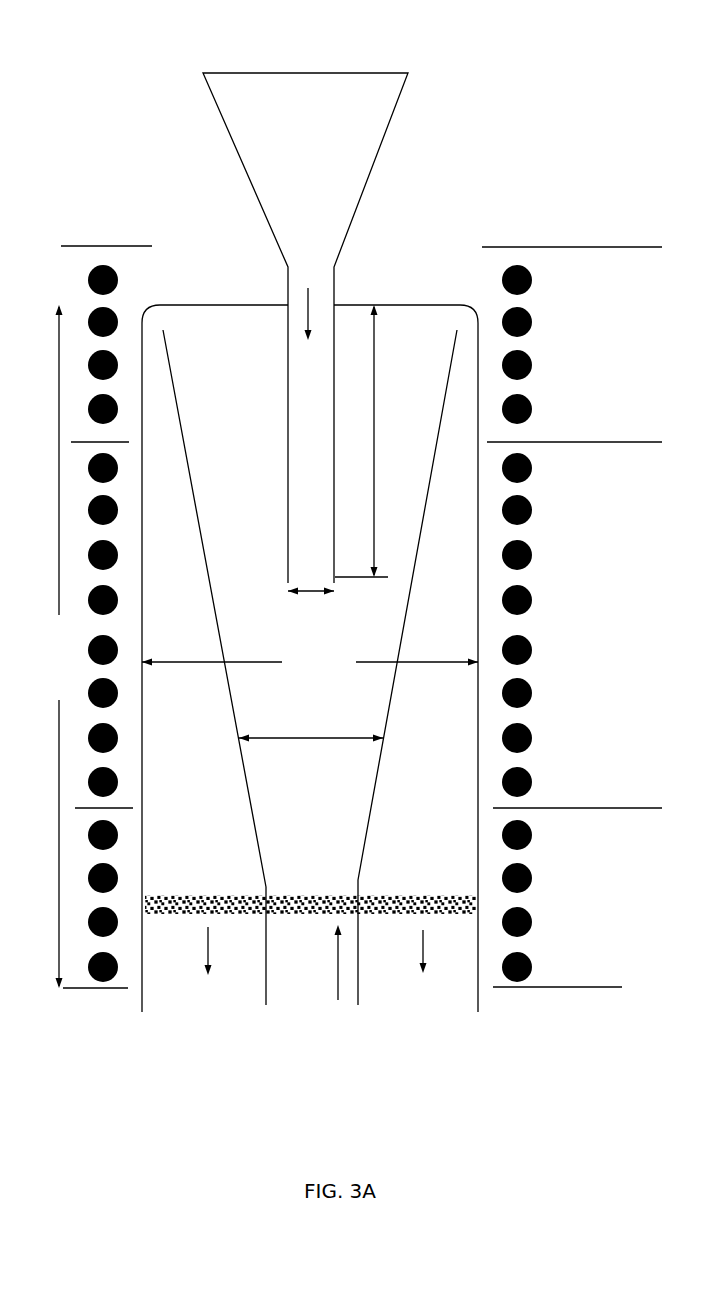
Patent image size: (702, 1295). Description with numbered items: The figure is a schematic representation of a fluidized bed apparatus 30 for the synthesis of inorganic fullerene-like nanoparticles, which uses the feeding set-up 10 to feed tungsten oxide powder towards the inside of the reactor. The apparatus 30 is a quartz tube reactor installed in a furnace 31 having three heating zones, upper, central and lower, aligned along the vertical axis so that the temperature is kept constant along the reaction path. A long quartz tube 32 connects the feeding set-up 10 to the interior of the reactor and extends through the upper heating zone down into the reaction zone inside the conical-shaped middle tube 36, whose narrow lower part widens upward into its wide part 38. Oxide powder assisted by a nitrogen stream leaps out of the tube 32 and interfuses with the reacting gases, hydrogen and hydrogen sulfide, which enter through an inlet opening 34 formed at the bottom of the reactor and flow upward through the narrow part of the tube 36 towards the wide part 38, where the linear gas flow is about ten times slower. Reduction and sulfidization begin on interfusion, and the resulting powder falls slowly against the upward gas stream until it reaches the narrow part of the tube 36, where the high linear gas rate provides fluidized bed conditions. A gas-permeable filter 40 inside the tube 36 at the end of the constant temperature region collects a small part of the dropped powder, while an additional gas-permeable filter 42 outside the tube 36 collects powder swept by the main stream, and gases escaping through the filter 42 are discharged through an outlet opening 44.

The feeding set-up 10 is at (158, 125).
The fluidized bed apparatus 30 is at (447, 270).
The furnace 31 is at (623, 835).
The quartz tube 32 is at (288, 470).
The inlet opening 34 is at (217, 1070).
The middle tube 36 is at (238, 728).
The wide part 38 is at (241, 598).
The gas-permeable filter 40 is at (293, 915).
The additional gas-permeable filter 42 is at (232, 910).
The outlet opening 44 is at (243, 982).